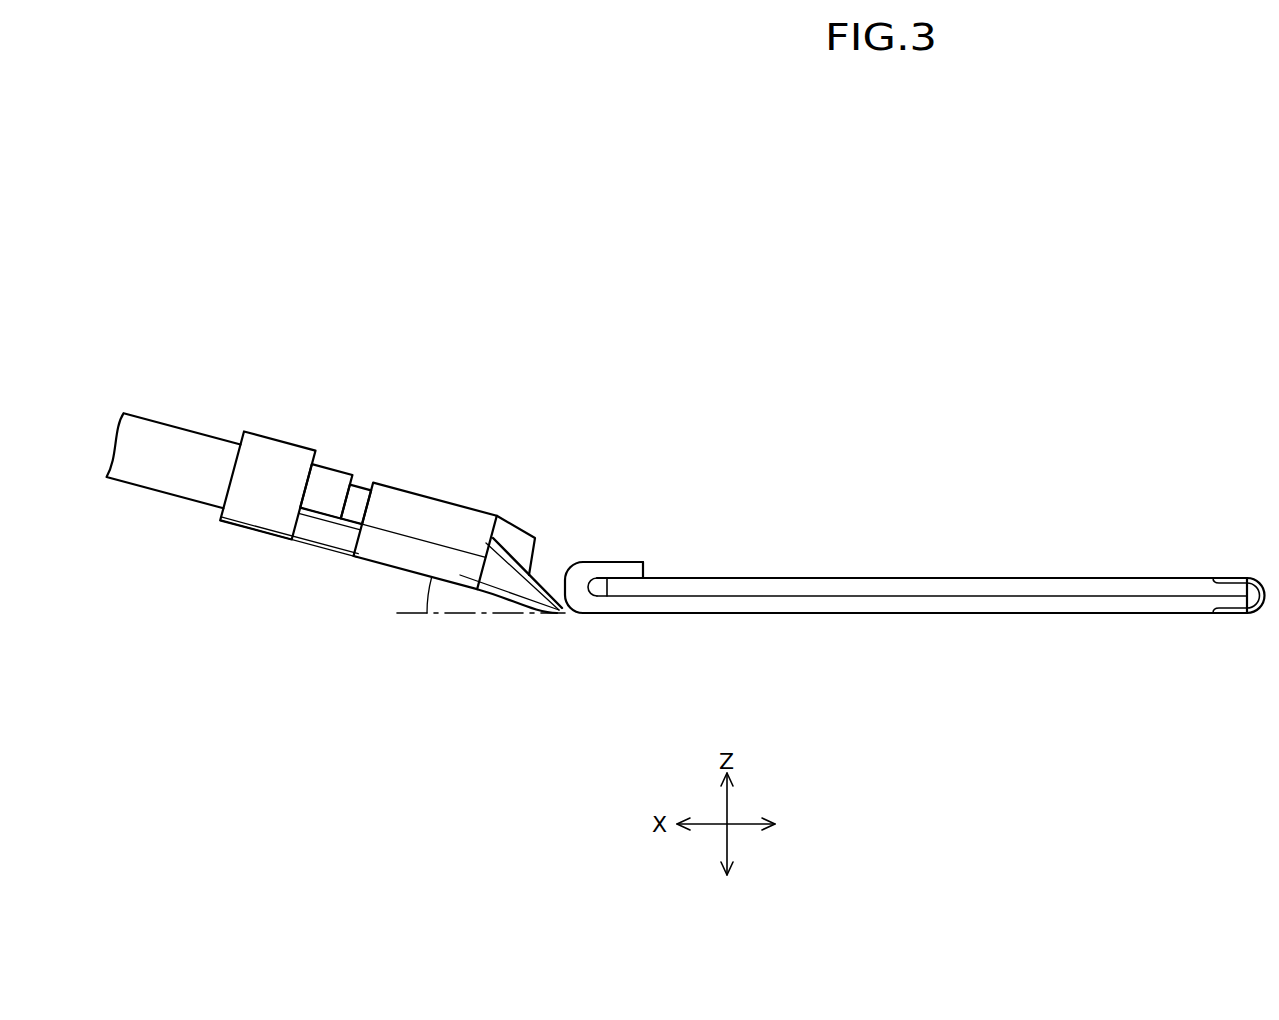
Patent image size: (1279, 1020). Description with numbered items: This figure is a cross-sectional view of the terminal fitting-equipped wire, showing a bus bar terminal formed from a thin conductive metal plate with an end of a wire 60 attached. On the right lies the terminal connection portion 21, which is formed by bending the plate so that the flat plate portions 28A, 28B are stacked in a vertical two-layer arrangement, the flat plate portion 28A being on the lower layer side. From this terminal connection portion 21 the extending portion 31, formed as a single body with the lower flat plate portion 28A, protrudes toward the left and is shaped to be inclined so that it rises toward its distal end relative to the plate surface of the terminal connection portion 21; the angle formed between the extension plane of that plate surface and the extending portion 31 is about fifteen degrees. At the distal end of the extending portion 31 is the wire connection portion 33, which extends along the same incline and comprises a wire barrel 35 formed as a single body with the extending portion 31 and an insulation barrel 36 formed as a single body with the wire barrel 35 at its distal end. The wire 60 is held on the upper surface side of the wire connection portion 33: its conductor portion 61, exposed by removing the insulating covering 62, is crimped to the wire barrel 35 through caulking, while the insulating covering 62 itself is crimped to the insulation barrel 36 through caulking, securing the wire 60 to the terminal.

The terminal connection portion 21 is at (1047, 537).
The flat plate portion 28A is at (838, 614).
The flat plate portion 28B is at (857, 578).
The extending portion 31 is at (547, 572).
The wire connection portion 33 is at (358, 564).
The wire barrel 35 is at (397, 513).
The insulation barrel 36 is at (258, 502).
The wire 60 is at (260, 435).
The conductor portion 61 is at (360, 498).
The insulating covering 62 is at (330, 483).